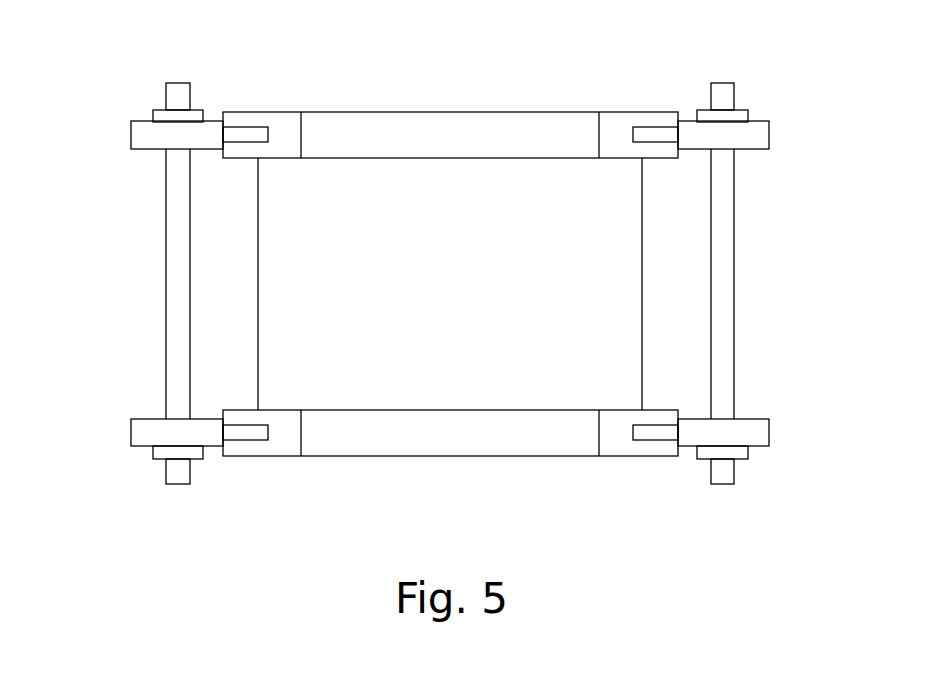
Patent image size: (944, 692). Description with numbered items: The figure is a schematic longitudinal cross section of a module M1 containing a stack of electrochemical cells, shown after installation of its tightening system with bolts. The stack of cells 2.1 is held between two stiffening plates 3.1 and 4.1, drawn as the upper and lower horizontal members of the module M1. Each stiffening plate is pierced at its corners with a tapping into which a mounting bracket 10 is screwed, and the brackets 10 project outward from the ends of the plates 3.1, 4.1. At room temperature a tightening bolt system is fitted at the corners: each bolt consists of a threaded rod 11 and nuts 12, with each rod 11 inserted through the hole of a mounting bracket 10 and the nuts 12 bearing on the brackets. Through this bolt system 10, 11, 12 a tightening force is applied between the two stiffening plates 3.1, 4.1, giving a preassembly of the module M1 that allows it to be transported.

The stack of cells 2.1 is at (349, 317).
The stiffening plate 3.1 is at (413, 130).
The stiffening plate 4.1 is at (462, 435).
The mounting bracket 10 is at (156, 132).
The threaded rod 11 is at (184, 216).
The nut 12 is at (156, 114).
The module M1 is at (165, 313).